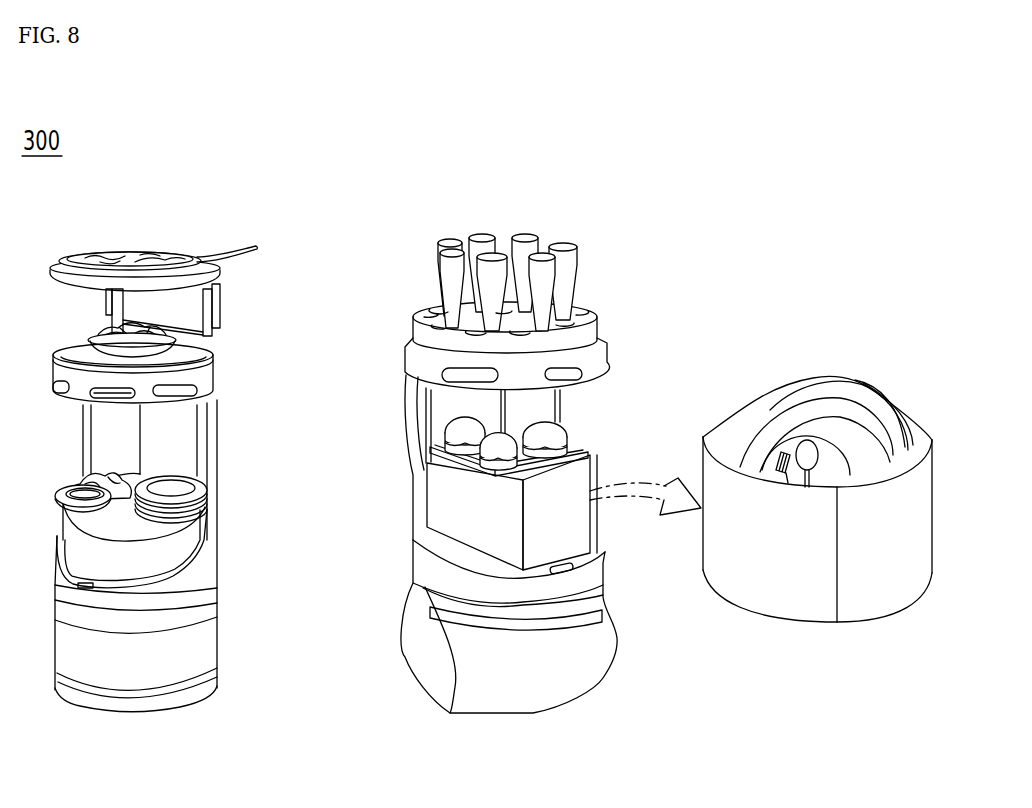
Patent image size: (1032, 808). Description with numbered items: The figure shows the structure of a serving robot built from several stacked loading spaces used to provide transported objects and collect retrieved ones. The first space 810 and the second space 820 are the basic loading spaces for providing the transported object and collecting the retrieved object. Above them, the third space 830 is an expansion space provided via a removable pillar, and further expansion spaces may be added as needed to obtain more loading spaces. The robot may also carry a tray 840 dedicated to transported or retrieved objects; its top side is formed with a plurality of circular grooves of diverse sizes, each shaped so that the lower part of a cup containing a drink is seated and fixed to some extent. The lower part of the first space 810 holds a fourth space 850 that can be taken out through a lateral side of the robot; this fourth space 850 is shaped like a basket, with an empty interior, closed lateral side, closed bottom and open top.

The first space 810 is at (200, 522).
The second space 820 is at (214, 384).
The third space 830 is at (206, 286).
The tray 840 is at (426, 338).
The fourth space 850 is at (448, 510).